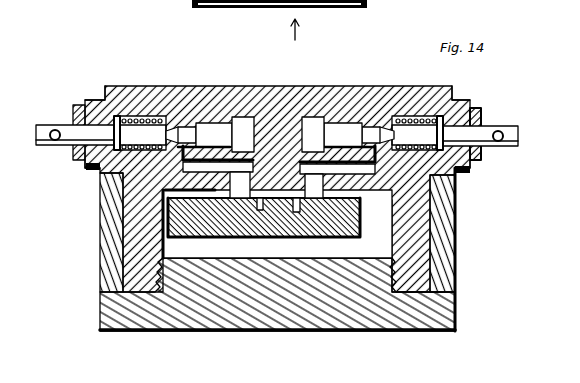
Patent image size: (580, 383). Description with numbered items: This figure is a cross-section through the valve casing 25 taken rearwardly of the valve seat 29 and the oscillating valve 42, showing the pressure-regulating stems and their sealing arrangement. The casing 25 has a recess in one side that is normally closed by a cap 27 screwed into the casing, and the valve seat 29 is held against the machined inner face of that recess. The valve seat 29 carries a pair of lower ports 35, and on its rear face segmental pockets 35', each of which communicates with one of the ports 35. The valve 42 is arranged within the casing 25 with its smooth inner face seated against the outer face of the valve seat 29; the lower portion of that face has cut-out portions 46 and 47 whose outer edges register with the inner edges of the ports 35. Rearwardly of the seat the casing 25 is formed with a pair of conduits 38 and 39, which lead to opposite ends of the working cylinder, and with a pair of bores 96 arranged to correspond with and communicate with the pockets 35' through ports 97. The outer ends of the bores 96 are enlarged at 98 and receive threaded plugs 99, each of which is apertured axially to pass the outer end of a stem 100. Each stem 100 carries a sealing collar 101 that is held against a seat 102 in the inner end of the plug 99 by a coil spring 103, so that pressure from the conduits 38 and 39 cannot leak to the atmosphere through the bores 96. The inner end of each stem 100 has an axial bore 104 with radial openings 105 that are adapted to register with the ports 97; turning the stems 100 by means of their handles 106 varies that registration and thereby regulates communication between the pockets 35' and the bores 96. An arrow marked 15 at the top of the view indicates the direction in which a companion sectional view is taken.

The direction arrow 15 is at (286, 31).
The valve casing 25 is at (292, 133).
The cap 27 is at (289, 335).
The valve seat 29 is at (395, 178).
The lower ports 35 is at (277, 224).
The segmental pockets 35' is at (275, 225).
The conduit 38 is at (315, 117).
The conduit 39 is at (245, 128).
The valve 42 is at (368, 233).
The cut-out portion 46 is at (259, 212).
The cut-out portion 47 is at (296, 214).
The bores 96 is at (222, 124).
The ports 97 is at (102, 203).
The enlarged outer ends 98 is at (125, 116).
The threaded plugs 99 is at (79, 107).
The stems 100 is at (64, 142).
The sealing collars 101 is at (108, 100).
The seats 102 is at (90, 175).
The coil springs 103 is at (146, 119).
The bores 104 is at (195, 128).
The radial openings 105 is at (183, 127).
The handles 106 is at (55, 130).